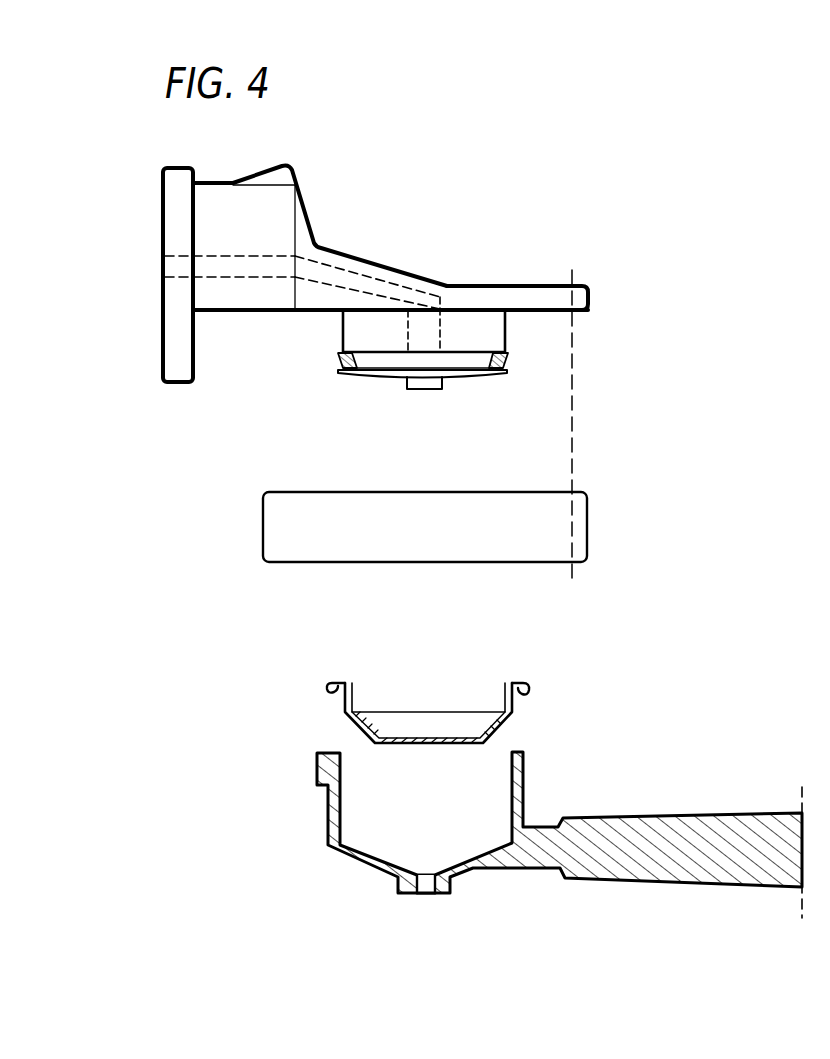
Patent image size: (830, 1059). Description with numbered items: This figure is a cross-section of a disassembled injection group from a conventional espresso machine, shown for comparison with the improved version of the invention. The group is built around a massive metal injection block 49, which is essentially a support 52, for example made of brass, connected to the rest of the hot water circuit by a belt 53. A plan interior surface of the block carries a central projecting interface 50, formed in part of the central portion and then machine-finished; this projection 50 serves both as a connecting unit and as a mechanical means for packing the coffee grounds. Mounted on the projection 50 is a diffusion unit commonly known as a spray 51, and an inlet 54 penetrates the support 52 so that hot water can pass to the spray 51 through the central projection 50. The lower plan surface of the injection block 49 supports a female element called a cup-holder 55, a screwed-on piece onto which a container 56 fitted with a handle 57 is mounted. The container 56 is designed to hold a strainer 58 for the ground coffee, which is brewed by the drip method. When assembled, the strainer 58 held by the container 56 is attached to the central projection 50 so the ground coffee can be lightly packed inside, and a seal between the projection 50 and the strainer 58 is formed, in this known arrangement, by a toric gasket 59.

The injection block 49 is at (386, 235).
The central projecting interface 50 is at (330, 319).
The spray 51 is at (371, 390).
The support 52 is at (500, 300).
The belt 53 is at (180, 184).
The inlet 54 is at (262, 268).
The cup-holder 55 is at (573, 528).
The container 56 is at (327, 808).
The handle 57 is at (663, 822).
The strainer 58 is at (331, 708).
The toric gasket 59 is at (507, 362).